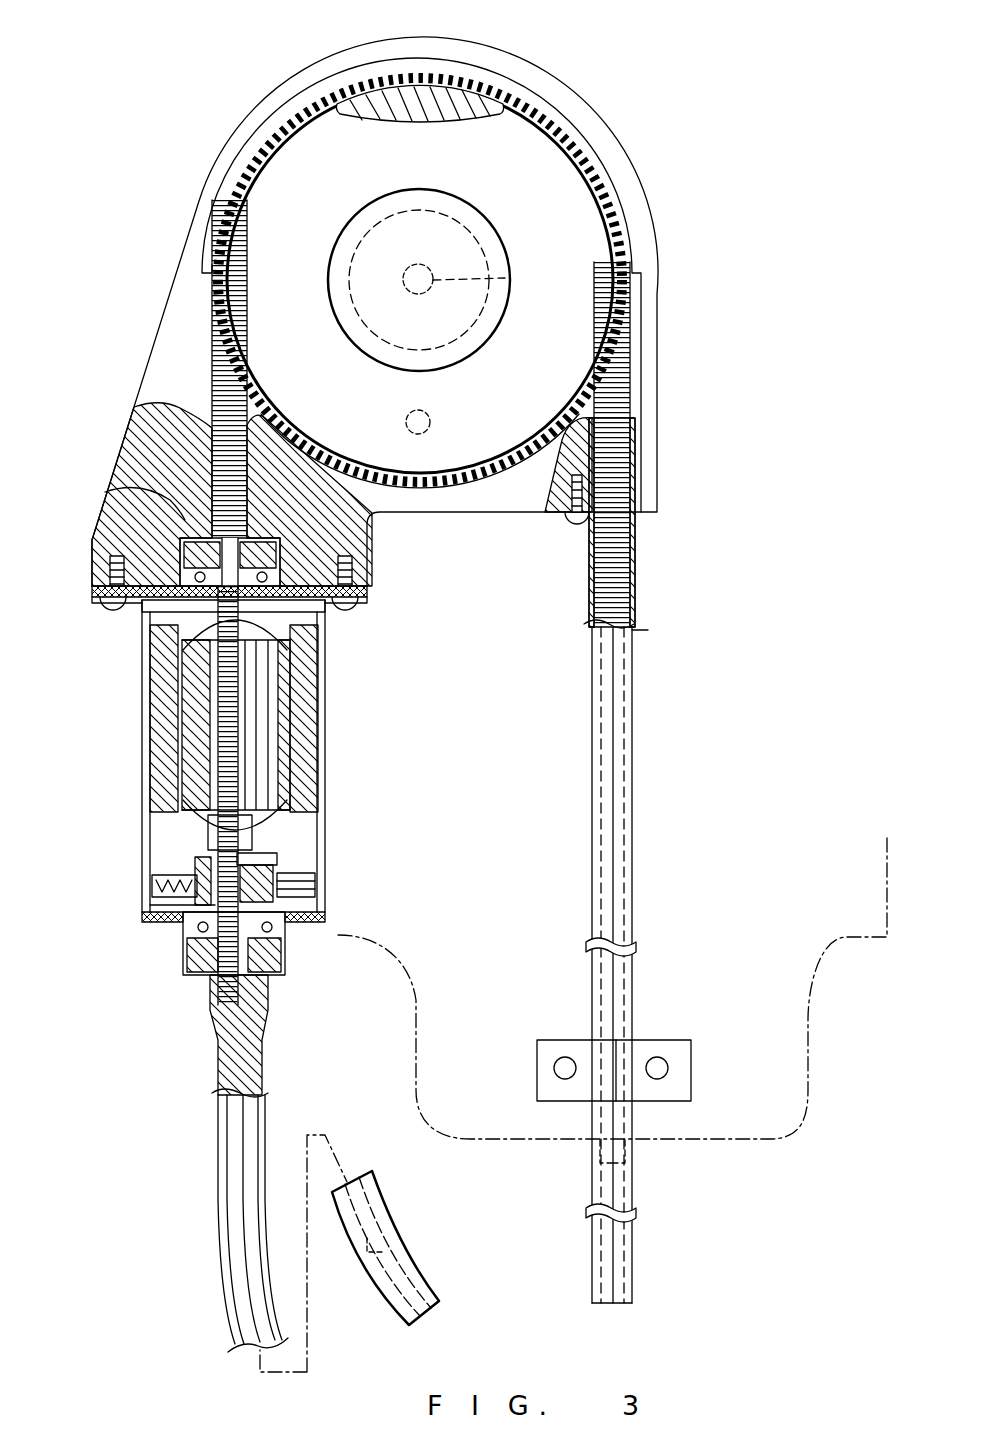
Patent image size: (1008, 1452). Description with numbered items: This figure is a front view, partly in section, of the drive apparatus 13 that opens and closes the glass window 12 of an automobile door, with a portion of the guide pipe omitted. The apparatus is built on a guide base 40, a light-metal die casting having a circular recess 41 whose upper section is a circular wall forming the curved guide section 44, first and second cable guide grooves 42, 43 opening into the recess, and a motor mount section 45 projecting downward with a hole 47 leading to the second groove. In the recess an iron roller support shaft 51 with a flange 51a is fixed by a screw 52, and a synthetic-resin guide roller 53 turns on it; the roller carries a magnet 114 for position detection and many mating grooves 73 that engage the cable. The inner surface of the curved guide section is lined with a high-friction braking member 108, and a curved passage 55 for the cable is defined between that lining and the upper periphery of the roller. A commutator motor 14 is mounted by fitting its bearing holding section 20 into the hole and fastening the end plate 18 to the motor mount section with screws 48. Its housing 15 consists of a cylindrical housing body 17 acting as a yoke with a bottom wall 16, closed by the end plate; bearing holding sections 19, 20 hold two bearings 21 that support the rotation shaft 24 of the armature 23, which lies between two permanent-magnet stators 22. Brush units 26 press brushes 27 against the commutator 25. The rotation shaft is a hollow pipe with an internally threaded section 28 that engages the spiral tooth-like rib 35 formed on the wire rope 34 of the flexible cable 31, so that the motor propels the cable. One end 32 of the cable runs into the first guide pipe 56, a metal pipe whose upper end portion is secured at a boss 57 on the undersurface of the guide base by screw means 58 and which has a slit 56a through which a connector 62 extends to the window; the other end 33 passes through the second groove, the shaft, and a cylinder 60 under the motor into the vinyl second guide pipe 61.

The glass window 12 is at (852, 938).
The drive apparatus 13 is at (146, 304).
The commutator motor 14 is at (328, 750).
The housing 15 is at (145, 928).
The bottom wall 16 is at (166, 945).
The housing body 17 is at (143, 710).
The end plate 18 is at (142, 622).
The bearing holding section 19 is at (192, 962).
The bearing holding section 20 is at (180, 495).
The bearing 21 is at (322, 615).
The stator 22 is at (310, 698).
The armature 23 is at (278, 832).
The rotation shaft 24 is at (210, 843).
The commutator 25 is at (255, 872).
The brush unit 26 is at (160, 862).
The brush 27 is at (176, 897).
The internally threaded section 28 is at (185, 545).
The cable 31 is at (620, 340).
The one end of cable 32 is at (630, 1158).
The other end of cable 33 is at (382, 1232).
The wire rope 34 is at (615, 358).
The tooth-like rib 35 is at (625, 388).
The guide base 40 is at (148, 352).
The recess 41 is at (447, 488).
The first cable guide groove 42 is at (636, 458).
The second cable guide groove 43 is at (210, 430).
The curved guide section 44 is at (532, 64).
The motor mount section 45 is at (102, 575).
The hole 47 is at (270, 565).
The screw 48 is at (372, 580).
The roller support shaft 51 is at (470, 318).
The flange 51a is at (455, 355).
The screw 52 is at (505, 278).
The guide roller 53 is at (558, 160).
The curved passage 55 is at (272, 136).
The first guide pipe 56 is at (636, 866).
The slit 56a is at (620, 810).
The boss 57 is at (575, 515).
The screw means 58 is at (578, 524).
The cylinder 60 is at (218, 1002).
The second guide pipe 61 is at (222, 1180).
The connector 62 is at (650, 1040).
The mating groove 73 is at (405, 104).
The braking member 108 is at (312, 86).
The magnet 114 is at (430, 421).